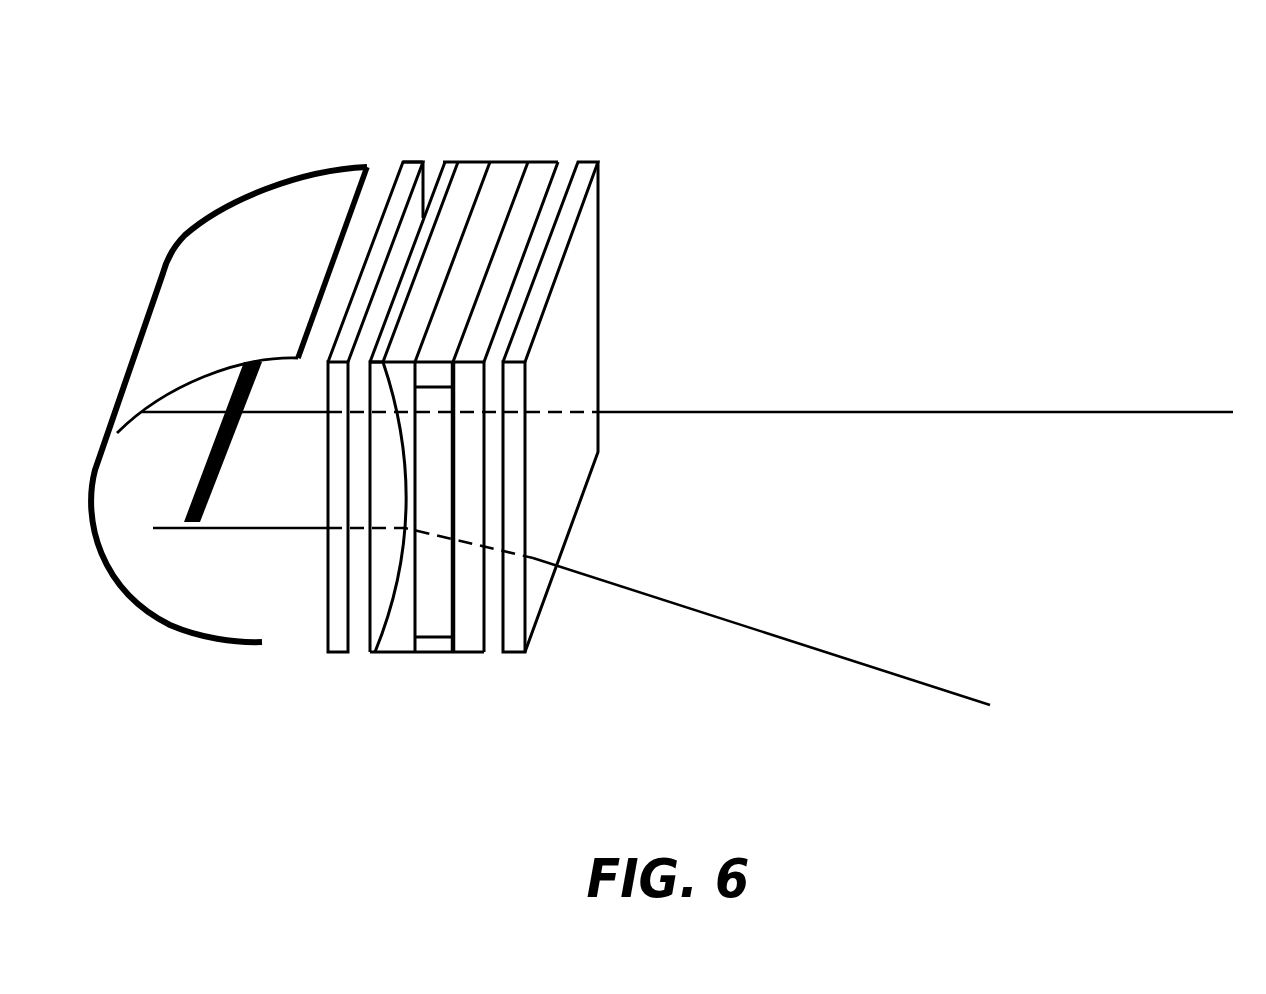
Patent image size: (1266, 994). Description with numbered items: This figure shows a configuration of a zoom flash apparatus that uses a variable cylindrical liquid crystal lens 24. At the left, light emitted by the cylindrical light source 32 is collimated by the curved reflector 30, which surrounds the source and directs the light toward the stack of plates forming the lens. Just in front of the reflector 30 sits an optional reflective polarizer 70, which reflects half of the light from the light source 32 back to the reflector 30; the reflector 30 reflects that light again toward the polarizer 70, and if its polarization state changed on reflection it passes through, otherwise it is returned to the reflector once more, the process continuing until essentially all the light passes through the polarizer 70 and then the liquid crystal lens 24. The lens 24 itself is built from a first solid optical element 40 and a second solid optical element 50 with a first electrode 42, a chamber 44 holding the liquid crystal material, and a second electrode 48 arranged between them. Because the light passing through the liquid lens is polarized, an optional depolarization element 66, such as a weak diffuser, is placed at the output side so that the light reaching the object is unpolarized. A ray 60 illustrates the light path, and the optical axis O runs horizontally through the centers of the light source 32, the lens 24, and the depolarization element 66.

The liquid crystal lens 24 is at (528, 156).
The reflector 30 is at (228, 193).
The light source 32 is at (233, 437).
The first solid optical element 40 is at (370, 605).
The first electrode 42 is at (372, 640).
The chamber 44 is at (428, 645).
The second electrode 48 is at (453, 615).
The second solid optical element 50 is at (475, 612).
The ray 60 is at (898, 670).
The depolarization element 66 is at (600, 162).
The polarizer 70 is at (409, 160).
The optical axis O is at (1205, 412).